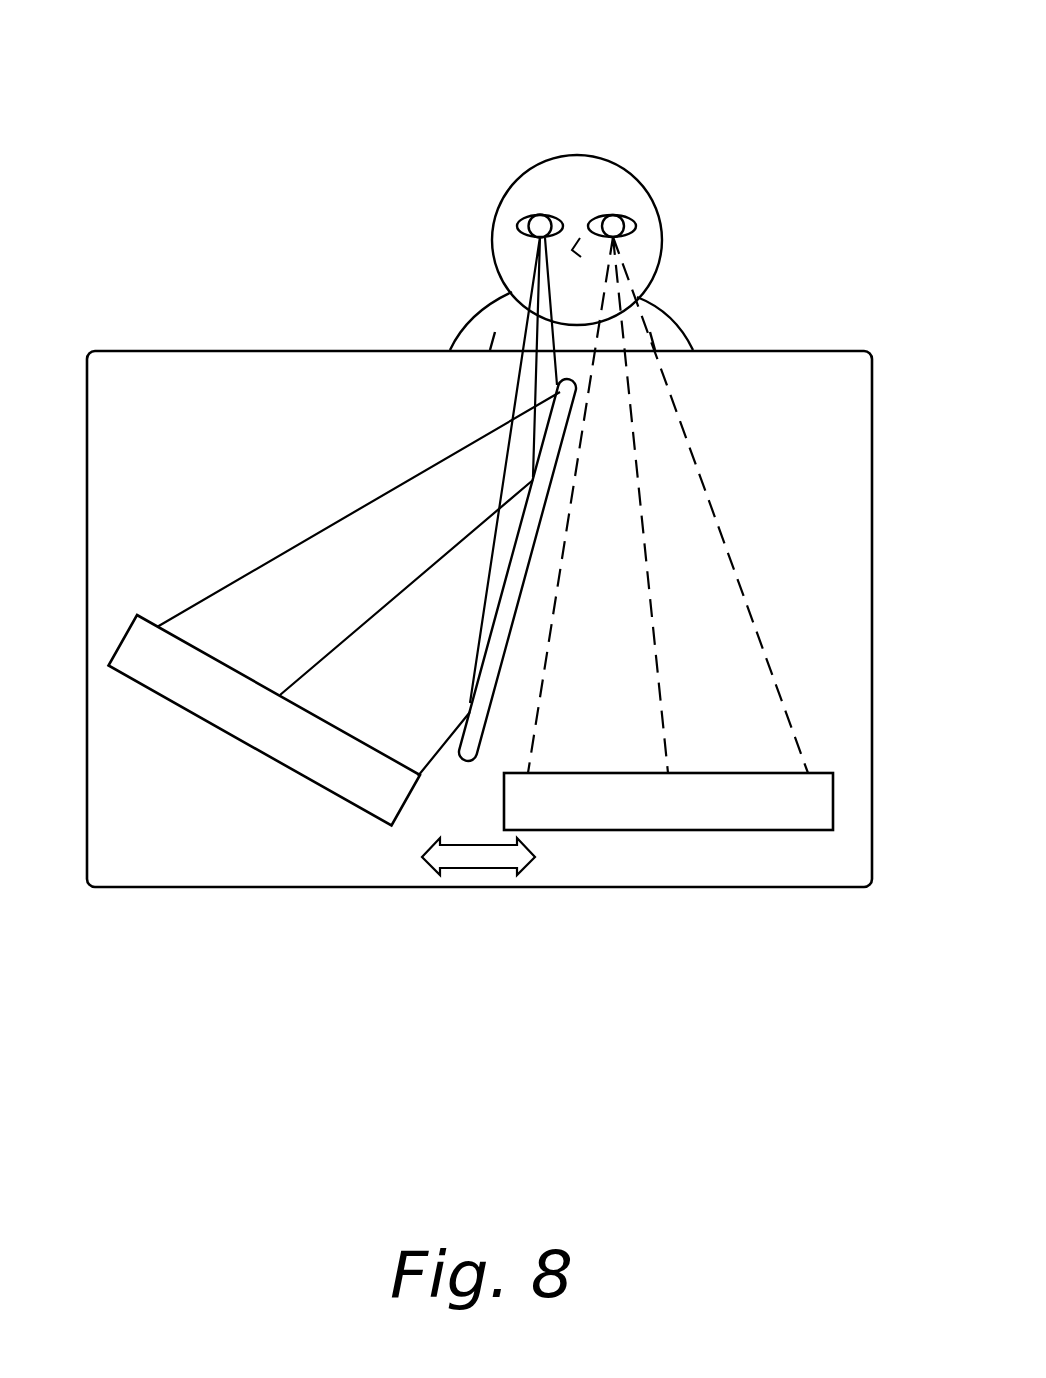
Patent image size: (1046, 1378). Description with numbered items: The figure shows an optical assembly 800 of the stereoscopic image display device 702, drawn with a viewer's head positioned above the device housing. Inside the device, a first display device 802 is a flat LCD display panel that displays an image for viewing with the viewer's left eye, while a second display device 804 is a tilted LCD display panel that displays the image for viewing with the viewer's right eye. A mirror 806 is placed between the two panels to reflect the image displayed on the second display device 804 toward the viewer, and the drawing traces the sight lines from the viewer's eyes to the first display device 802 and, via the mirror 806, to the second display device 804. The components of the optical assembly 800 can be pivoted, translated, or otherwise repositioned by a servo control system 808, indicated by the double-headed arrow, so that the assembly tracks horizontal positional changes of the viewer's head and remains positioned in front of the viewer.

The optical assembly 800 is at (772, 62).
The stereoscopic image display device 702 is at (812, 350).
The first display device 802 is at (700, 830).
The second display device 804 is at (268, 756).
The mirror 806 is at (465, 757).
The servo control system 808 is at (490, 870).